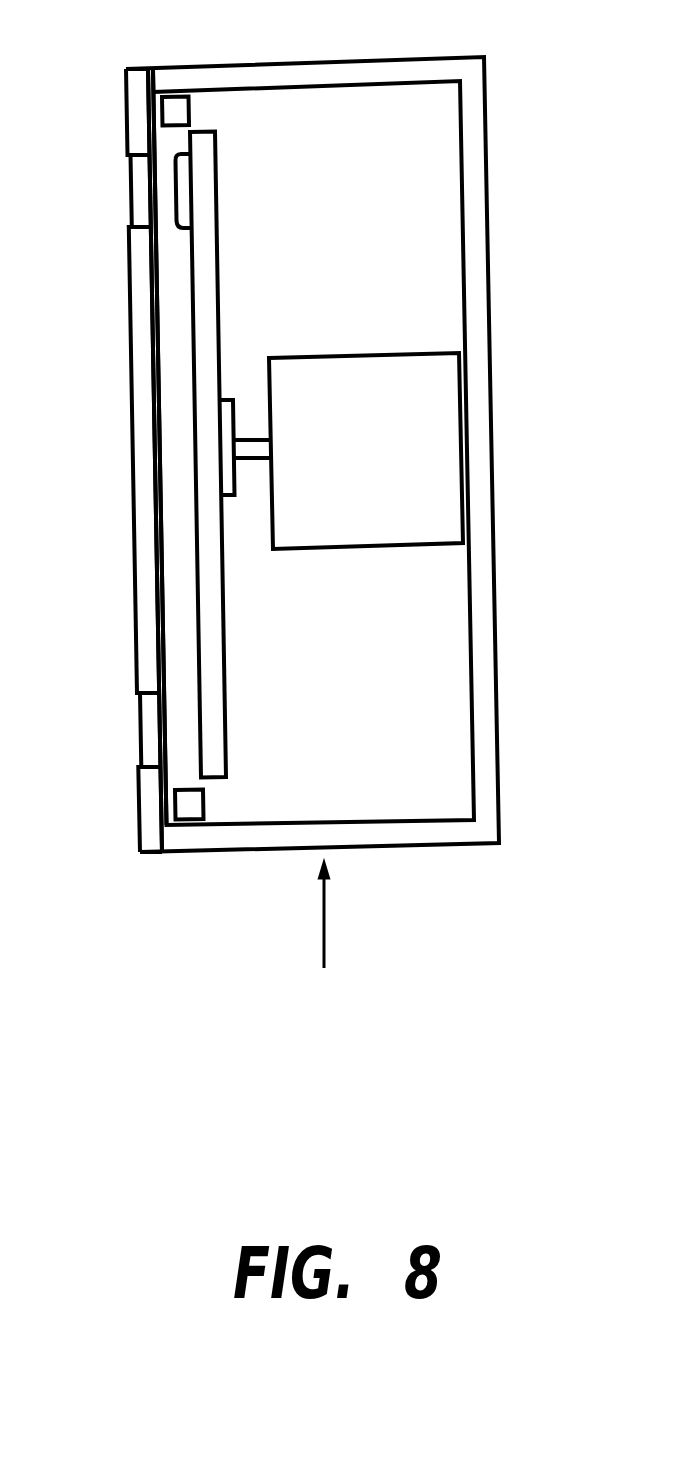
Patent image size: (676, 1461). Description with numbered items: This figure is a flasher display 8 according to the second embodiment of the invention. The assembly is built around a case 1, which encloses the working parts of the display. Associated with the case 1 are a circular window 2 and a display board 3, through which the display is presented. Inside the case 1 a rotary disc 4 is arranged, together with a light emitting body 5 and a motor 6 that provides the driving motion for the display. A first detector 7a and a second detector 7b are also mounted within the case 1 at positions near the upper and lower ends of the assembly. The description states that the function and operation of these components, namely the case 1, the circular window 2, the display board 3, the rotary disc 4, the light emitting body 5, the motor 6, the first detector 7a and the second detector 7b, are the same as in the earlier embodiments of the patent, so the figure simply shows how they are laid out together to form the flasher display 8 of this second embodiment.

The case 1 is at (403, 59).
The circular window 2 is at (142, 198).
The display board 3 is at (148, 407).
The rotary disc 4 is at (213, 684).
The light emitting body 5 is at (182, 178).
The motor 6 is at (425, 438).
The first detector 7a is at (174, 113).
The second detector 7b is at (187, 803).
The flasher display 8 is at (320, 943).